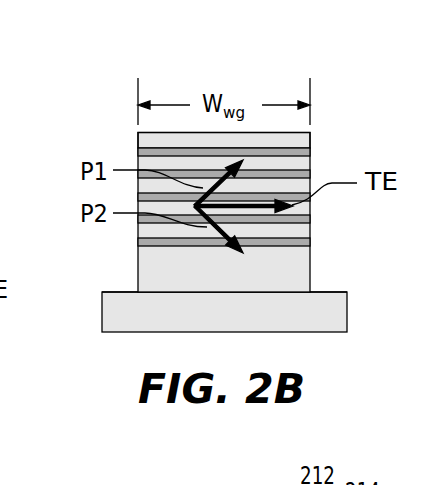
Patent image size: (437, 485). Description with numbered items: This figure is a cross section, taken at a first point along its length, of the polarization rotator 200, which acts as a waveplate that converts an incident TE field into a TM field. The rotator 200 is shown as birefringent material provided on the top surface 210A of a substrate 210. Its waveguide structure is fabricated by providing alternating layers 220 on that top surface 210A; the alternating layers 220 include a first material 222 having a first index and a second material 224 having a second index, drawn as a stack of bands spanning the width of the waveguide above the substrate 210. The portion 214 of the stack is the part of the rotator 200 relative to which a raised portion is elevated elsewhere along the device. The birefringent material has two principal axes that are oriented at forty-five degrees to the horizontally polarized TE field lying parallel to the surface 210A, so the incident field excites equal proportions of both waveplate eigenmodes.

The polarization rotator 200 is at (48, 74).
The substrate 210 is at (243, 326).
The top surface of substrate 210A is at (115, 292).
The portion 214 is at (303, 130).
The alternating layers 220 is at (319, 135).
The first material 222 is at (310, 240).
The second material 224 is at (310, 228).